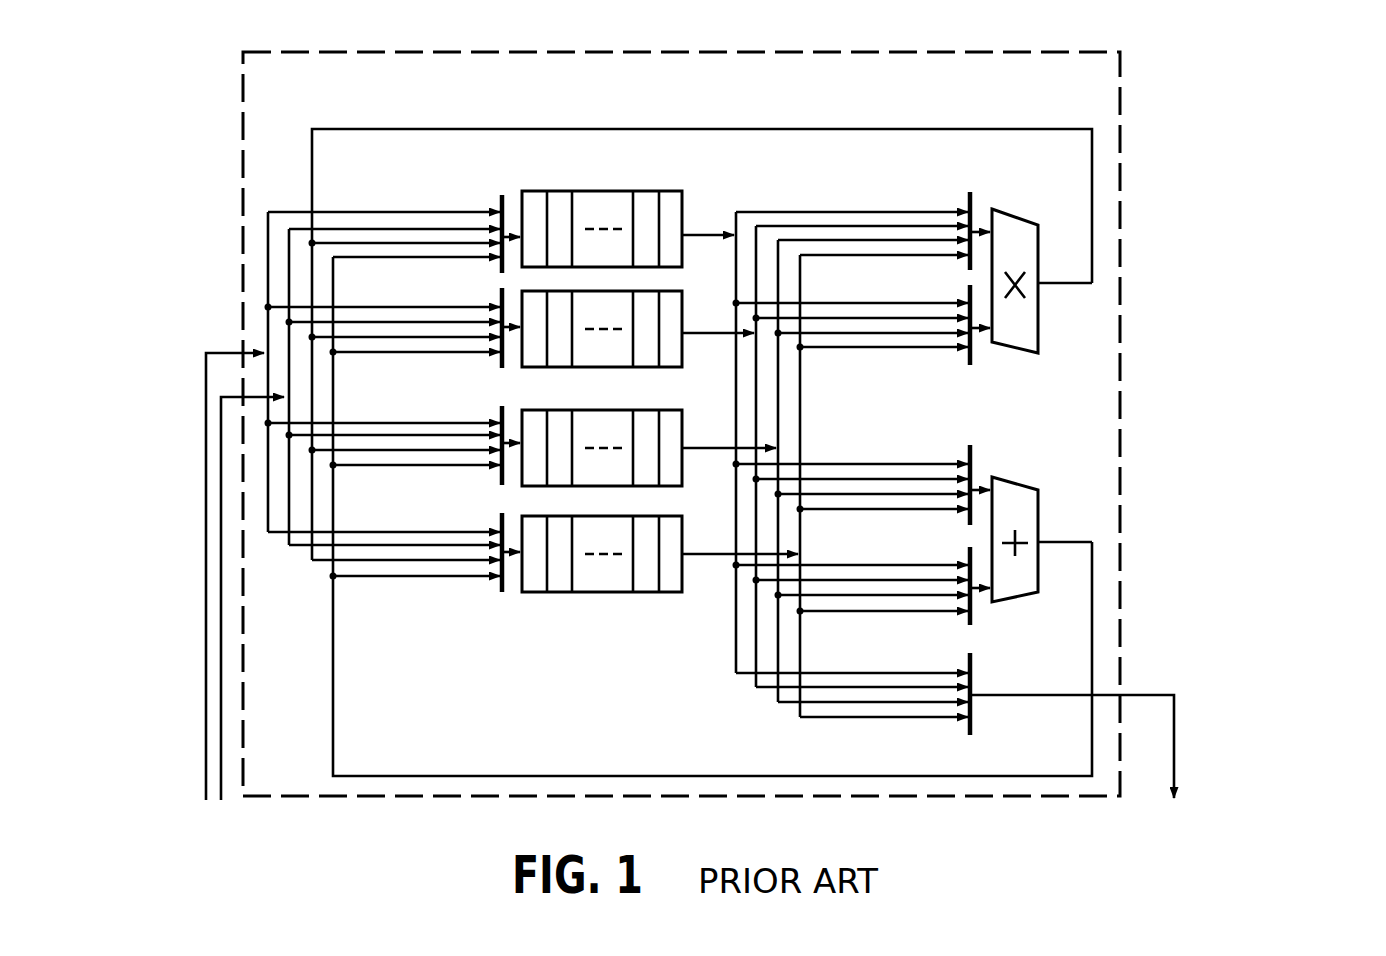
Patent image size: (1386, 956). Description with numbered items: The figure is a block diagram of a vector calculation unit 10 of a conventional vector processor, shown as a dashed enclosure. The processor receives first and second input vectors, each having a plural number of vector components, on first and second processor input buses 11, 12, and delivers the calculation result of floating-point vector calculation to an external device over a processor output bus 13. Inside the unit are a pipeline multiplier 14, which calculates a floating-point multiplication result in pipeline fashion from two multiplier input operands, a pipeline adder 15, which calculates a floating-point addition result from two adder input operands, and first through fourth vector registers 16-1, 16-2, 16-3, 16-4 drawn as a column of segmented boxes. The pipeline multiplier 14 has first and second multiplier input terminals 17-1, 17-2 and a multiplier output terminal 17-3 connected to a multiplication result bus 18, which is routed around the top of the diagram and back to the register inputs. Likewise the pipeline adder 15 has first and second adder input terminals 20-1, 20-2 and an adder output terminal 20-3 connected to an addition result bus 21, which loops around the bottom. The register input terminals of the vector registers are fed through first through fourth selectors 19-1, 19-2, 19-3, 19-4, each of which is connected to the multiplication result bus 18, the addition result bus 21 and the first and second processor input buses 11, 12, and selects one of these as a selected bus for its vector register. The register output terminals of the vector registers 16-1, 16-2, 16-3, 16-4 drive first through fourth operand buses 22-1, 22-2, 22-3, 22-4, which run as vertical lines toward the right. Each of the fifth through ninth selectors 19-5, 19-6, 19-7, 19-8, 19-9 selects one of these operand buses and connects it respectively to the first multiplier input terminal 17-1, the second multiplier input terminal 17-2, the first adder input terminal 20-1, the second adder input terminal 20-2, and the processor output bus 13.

The vector calculation unit 10 is at (1120, 52).
The first processor input bus 11 is at (206, 642).
The second processor input bus 12 is at (221, 590).
The processor output bus 13 is at (1174, 742).
The pipeline multiplier 14 is at (1040, 353).
The pipeline adder 15 is at (1040, 492).
The first vector register 16-1 is at (585, 191).
The second vector register 16-2 is at (668, 300).
The third vector register 16-3 is at (522, 486).
The fourth vector register 16-4 is at (590, 594).
The first multiplier input terminal 17-1 is at (990, 228).
The second multiplier input terminal 17-2 is at (990, 332).
The multiplier output terminal 17-3 is at (1042, 286).
The multiplication result bus 18 is at (912, 128).
The first selector 19-1 is at (502, 192).
The second selector 19-2 is at (500, 364).
The third selector 19-3 is at (500, 482).
The fourth selector 19-4 is at (502, 594).
The fifth selector 19-5 is at (968, 190).
The sixth selector 19-6 is at (968, 362).
The seventh selector 19-7 is at (968, 448).
The eighth selector 19-8 is at (968, 622).
The ninth selector 19-9 is at (972, 727).
The first adder input terminal 20-1 is at (992, 480).
The second adder input terminal 20-2 is at (992, 604).
The adder output terminal 20-3 is at (1040, 560).
The addition result bus 21 is at (732, 776).
The first operand bus 22-1 is at (698, 234).
The second operand bus 22-2 is at (706, 333).
The third operand bus 22-3 is at (704, 448).
The fourth operand bus 22-4 is at (706, 554).